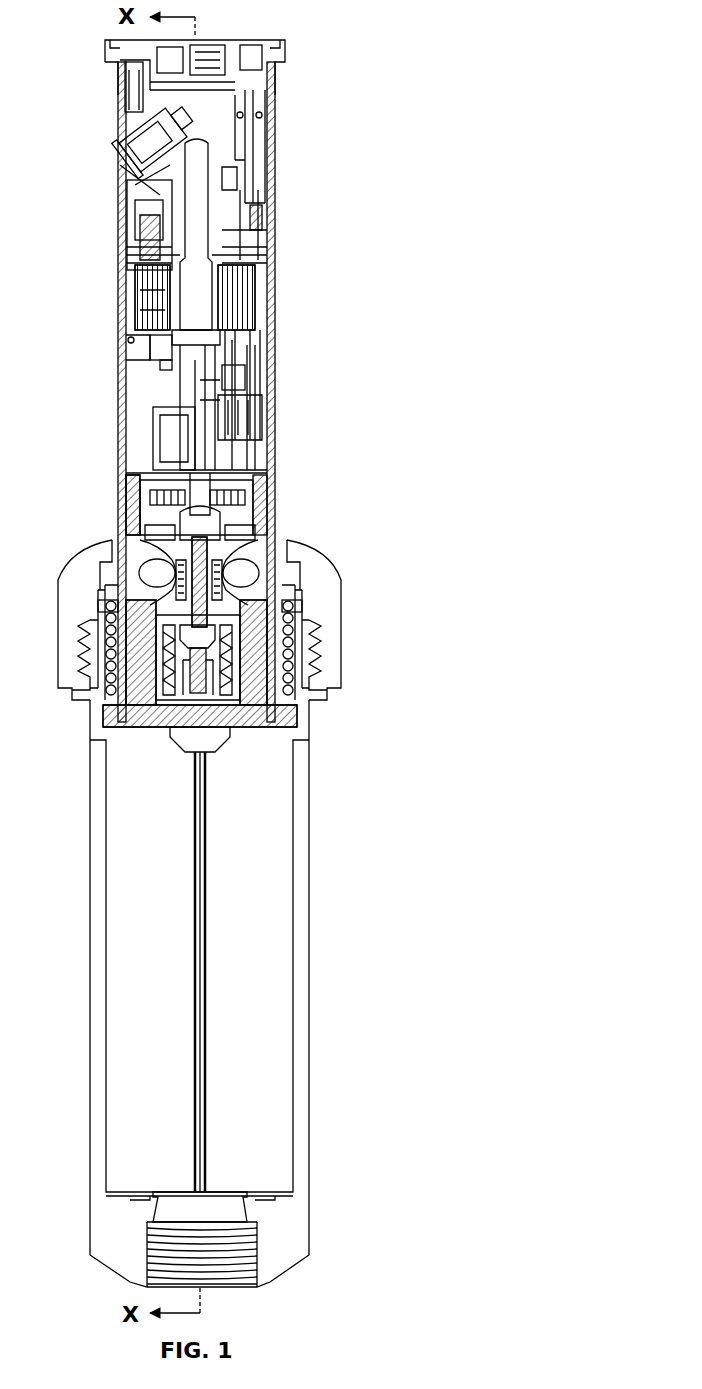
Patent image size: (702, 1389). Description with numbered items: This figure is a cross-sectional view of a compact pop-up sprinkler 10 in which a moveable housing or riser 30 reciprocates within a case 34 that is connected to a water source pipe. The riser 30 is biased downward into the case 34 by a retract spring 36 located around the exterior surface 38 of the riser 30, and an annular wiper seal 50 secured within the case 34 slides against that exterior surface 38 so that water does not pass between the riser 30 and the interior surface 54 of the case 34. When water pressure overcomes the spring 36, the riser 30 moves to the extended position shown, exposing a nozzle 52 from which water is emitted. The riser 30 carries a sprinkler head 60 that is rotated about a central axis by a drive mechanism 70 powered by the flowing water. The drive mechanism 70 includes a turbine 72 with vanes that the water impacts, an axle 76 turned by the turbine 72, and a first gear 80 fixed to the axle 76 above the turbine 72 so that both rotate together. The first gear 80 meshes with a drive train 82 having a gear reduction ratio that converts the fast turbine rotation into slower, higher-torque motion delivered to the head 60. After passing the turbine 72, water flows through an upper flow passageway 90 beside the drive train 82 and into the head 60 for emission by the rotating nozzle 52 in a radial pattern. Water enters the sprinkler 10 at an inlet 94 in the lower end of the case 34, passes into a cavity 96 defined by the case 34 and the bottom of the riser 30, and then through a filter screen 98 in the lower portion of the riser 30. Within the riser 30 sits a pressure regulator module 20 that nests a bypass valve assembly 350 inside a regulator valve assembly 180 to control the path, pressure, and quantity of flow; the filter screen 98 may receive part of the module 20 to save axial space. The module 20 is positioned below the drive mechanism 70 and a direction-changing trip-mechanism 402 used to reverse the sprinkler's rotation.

The sprinkler 10 is at (315, 57).
The pressure regulator module 20 is at (270, 620).
The riser 30 is at (277, 353).
The case 34 is at (310, 910).
The retract spring 36 is at (292, 702).
The exterior surface 38 is at (278, 453).
The wiper seal 50 is at (112, 547).
The nozzle 52 is at (112, 133).
The interior surface 54 is at (108, 820).
The sprinkler head 60 is at (283, 178).
The drive mechanism 70 is at (150, 420).
The turbine 72 is at (247, 528).
The axle 76 is at (150, 478).
The first gear 80 is at (195, 497).
The drive train 82 is at (232, 408).
The upper flow passageway 90 is at (135, 395).
The inlet 94 is at (240, 1290).
The cavity 96 is at (283, 830).
The filter screen 98 is at (110, 715).
The regulator valve assembly 180 is at (275, 650).
The bypass valve assembly 350 is at (250, 558).
The direction-changing trip-mechanism 402 is at (279, 303).